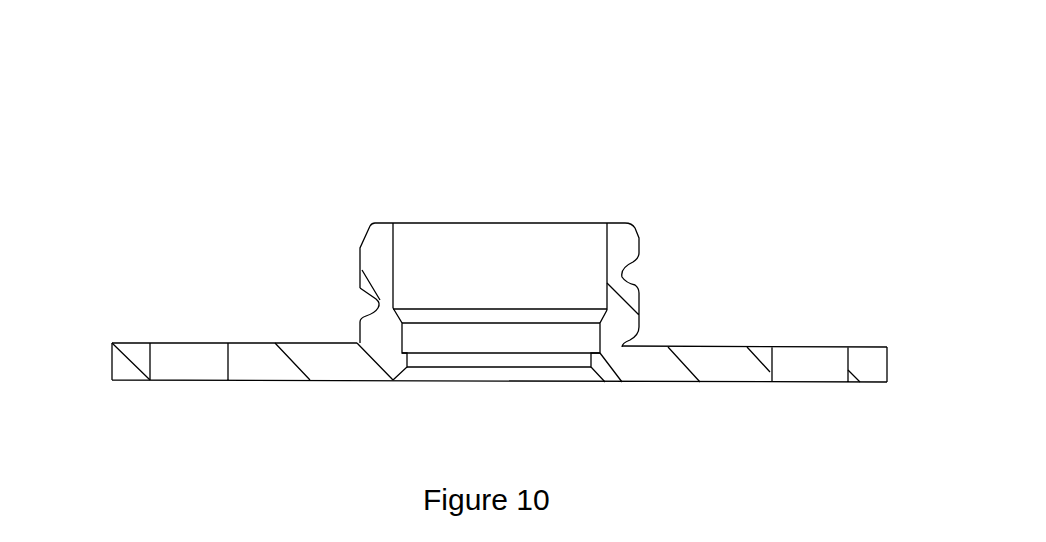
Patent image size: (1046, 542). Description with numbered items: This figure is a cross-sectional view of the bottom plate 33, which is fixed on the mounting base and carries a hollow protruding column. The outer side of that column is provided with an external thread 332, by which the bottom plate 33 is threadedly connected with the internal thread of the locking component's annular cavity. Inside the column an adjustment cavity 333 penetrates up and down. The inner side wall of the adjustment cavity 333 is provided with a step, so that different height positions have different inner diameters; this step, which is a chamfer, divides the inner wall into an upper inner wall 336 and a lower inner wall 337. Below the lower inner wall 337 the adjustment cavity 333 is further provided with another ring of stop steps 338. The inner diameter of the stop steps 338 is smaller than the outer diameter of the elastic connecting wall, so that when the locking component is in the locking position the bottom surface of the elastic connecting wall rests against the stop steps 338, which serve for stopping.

The bottom plate 33 is at (505, 41).
The external thread 332 is at (372, 300).
The adjustment cavity 333 is at (407, 262).
The upper inner wall 336 is at (607, 256).
The lower inner wall 337 is at (600, 336).
The stop steps 338 is at (592, 360).